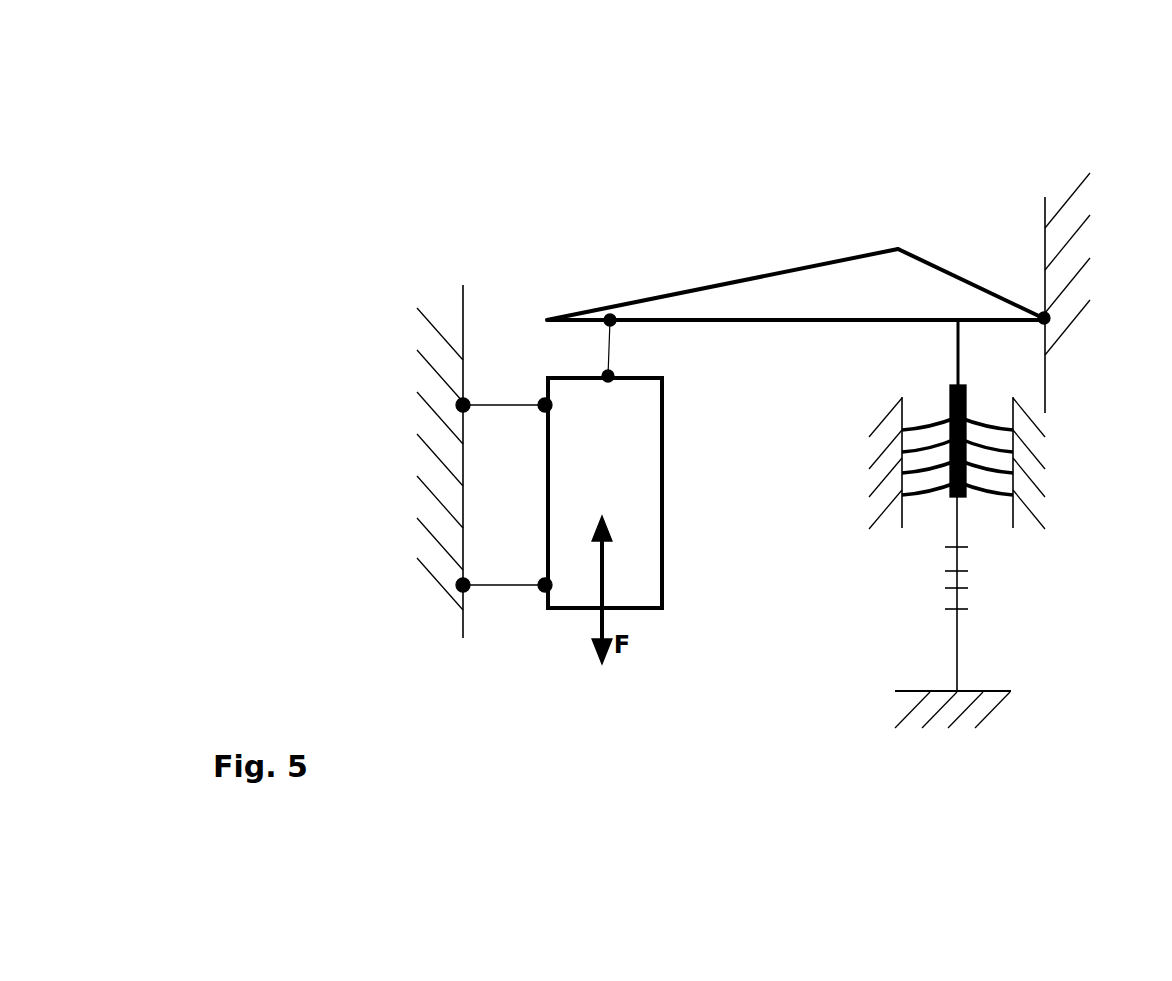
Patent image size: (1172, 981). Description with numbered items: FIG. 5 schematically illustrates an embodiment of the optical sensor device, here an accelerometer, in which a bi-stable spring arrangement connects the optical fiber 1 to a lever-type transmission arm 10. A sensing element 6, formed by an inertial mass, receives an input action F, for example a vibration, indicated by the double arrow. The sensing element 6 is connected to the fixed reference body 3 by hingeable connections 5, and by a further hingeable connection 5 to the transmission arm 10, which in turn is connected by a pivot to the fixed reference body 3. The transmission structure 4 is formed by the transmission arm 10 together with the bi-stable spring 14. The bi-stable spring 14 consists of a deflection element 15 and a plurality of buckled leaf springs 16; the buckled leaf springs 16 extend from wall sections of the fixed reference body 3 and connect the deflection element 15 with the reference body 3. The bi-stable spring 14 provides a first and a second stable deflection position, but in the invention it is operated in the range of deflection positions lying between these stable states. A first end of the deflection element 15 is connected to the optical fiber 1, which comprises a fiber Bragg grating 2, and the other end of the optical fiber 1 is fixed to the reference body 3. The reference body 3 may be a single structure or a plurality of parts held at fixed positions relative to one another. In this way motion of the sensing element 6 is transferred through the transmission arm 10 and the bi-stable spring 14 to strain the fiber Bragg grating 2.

The optical fiber 1 is at (956, 523).
The fiber Bragg grating 2 is at (955, 578).
The fixed reference body 3 is at (1078, 170).
The transmission structure 4 is at (798, 243).
The hingeable connections 5 is at (500, 563).
The sensing element 6 is at (662, 472).
The transmission arm 10 is at (868, 252).
The bi-stable spring 14 is at (925, 428).
The deflection element 15 is at (953, 392).
The buckled leaf springs 16 is at (985, 490).